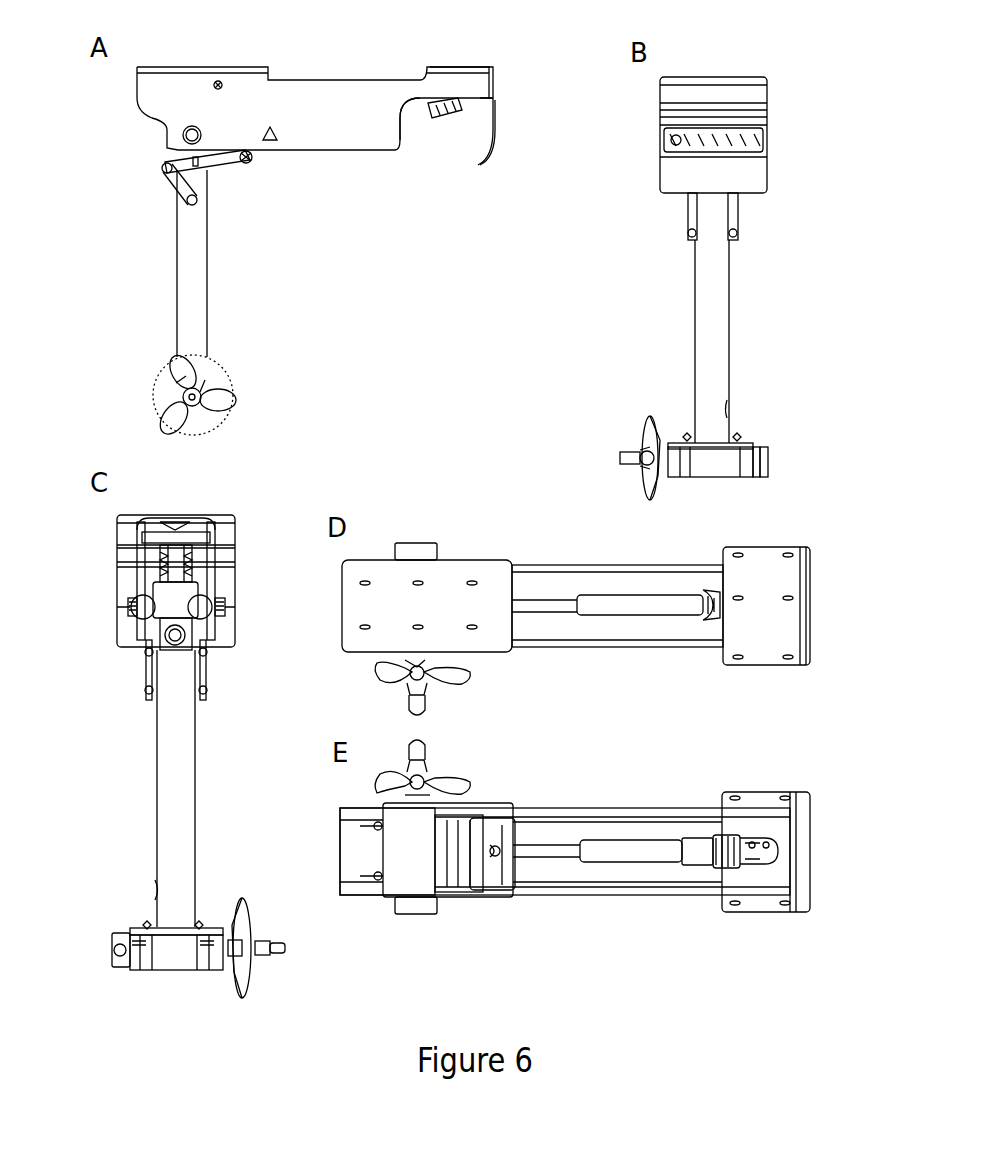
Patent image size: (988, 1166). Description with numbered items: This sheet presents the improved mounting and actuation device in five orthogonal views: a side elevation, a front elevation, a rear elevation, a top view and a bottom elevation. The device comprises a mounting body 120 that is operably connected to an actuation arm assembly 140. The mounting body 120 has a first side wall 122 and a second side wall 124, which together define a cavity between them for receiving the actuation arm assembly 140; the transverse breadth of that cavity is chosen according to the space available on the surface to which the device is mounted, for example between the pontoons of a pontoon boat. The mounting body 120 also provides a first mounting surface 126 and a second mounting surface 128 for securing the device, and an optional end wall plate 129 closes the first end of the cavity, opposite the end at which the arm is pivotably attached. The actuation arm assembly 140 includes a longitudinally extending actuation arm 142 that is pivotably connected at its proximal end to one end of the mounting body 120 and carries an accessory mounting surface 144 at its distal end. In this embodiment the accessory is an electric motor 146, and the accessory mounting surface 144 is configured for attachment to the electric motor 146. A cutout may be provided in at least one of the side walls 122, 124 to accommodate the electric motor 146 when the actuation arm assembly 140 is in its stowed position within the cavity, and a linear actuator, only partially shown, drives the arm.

In FIG. 6A, the mounting body 120 is at (118, 112).
In FIG. 6B, the mounting body 120 is at (628, 152).
In FIG. 6C, the mounting body 120 is at (98, 590).
In FIG. 6D, the first side wall 122 is at (603, 565).
In FIG. 6E, the first side wall 122 is at (583, 892).
In FIG. 6A, the second side wall 124 is at (373, 137).
In FIG. 6D, the second side wall 124 is at (622, 643).
In FIG. 6E, the second side wall 124 is at (563, 813).
In FIG. 6A, the first mounting surface 126 is at (452, 63).
In FIG. 6D, the first mounting surface 126 is at (765, 562).
In FIG. 6A, the second mounting surface 128 is at (200, 63).
In FIG. 6D, the second mounting surface 128 is at (452, 563).
In FIG. 6A, the end wall plate 129 is at (495, 110).
In FIG. 6B, the end wall plate 129 is at (735, 119).
In FIG. 6C, the end wall plate 129 is at (230, 585).
In FIG. 6D, the end wall plate 129 is at (810, 605).
In FIG. 6E, the end wall plate 129 is at (810, 852).
In FIG. 6A, the actuation arm assembly 140 is at (118, 280).
In FIG. 6B, the actuation arm assembly 140 is at (628, 318).
In FIG. 6C, the actuation arm assembly 140 is at (98, 756).
In FIG. 6A, the actuation arm 142 is at (200, 230).
In FIG. 6B, the actuation arm 142 is at (713, 298).
In FIG. 6C, the actuation arm 142 is at (185, 750).
In FIG. 6B, the accessory mounting surface 144 is at (753, 440).
In FIG. 6C, the accessory mounting surface 144 is at (203, 923).
In FIG. 6A, the electric motor 146 is at (203, 387).
In FIG. 6B, the electric motor 146 is at (713, 455).
In FIG. 6C, the electric motor 146 is at (180, 963).
In FIG. 6E, the electric motor 146 is at (422, 862).